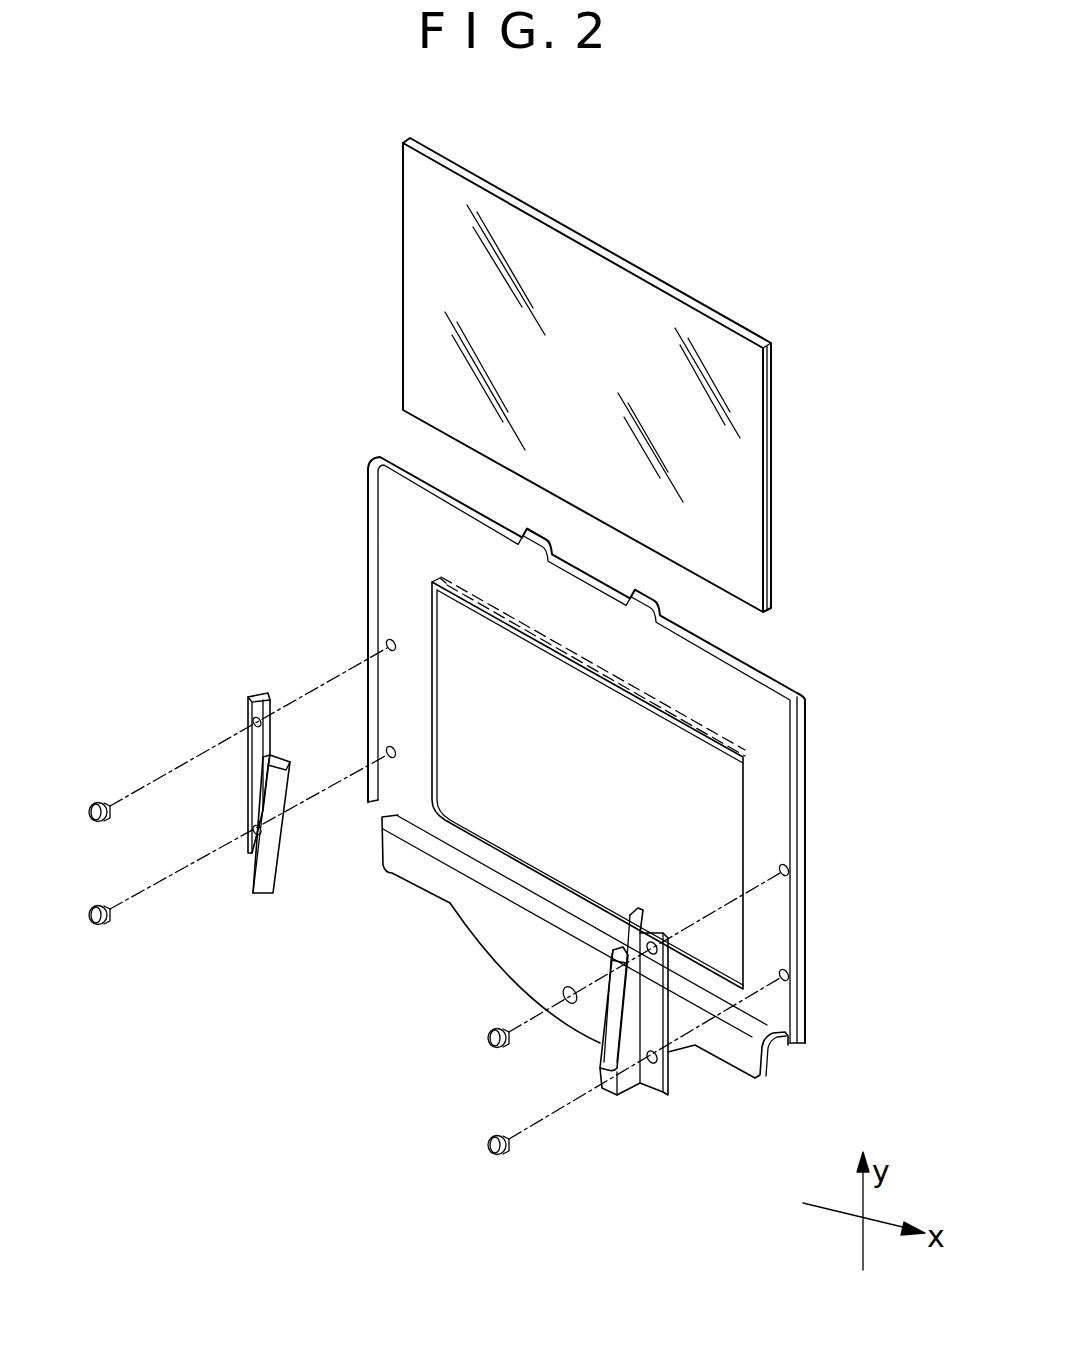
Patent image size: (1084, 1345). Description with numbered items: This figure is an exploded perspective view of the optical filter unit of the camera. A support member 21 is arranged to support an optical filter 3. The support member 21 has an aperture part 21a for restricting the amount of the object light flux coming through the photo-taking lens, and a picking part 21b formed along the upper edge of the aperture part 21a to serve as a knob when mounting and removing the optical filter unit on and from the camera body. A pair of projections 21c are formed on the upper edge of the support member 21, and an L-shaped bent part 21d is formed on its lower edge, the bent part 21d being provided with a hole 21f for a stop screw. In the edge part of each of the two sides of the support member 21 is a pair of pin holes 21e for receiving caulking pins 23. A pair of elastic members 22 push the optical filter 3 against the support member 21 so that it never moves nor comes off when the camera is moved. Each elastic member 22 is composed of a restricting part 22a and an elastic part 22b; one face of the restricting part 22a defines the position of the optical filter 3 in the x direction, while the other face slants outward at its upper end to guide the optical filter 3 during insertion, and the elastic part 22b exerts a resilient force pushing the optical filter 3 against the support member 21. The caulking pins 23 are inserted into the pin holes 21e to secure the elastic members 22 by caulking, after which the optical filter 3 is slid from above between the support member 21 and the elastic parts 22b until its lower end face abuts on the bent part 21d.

The optical filter 3 is at (737, 490).
The support member 21 is at (605, 782).
The aperture part 21a is at (723, 818).
The picking part 21b is at (745, 758).
The projections 21c is at (545, 537).
The L-shaped bent part 21d is at (770, 1040).
The pin holes 21e is at (387, 643).
The hole 21f is at (564, 993).
The elastic members 22 is at (495, 943).
The restricting part 22a is at (272, 732).
The elastic part 22b is at (275, 817).
The caulking pins 23 is at (112, 913).